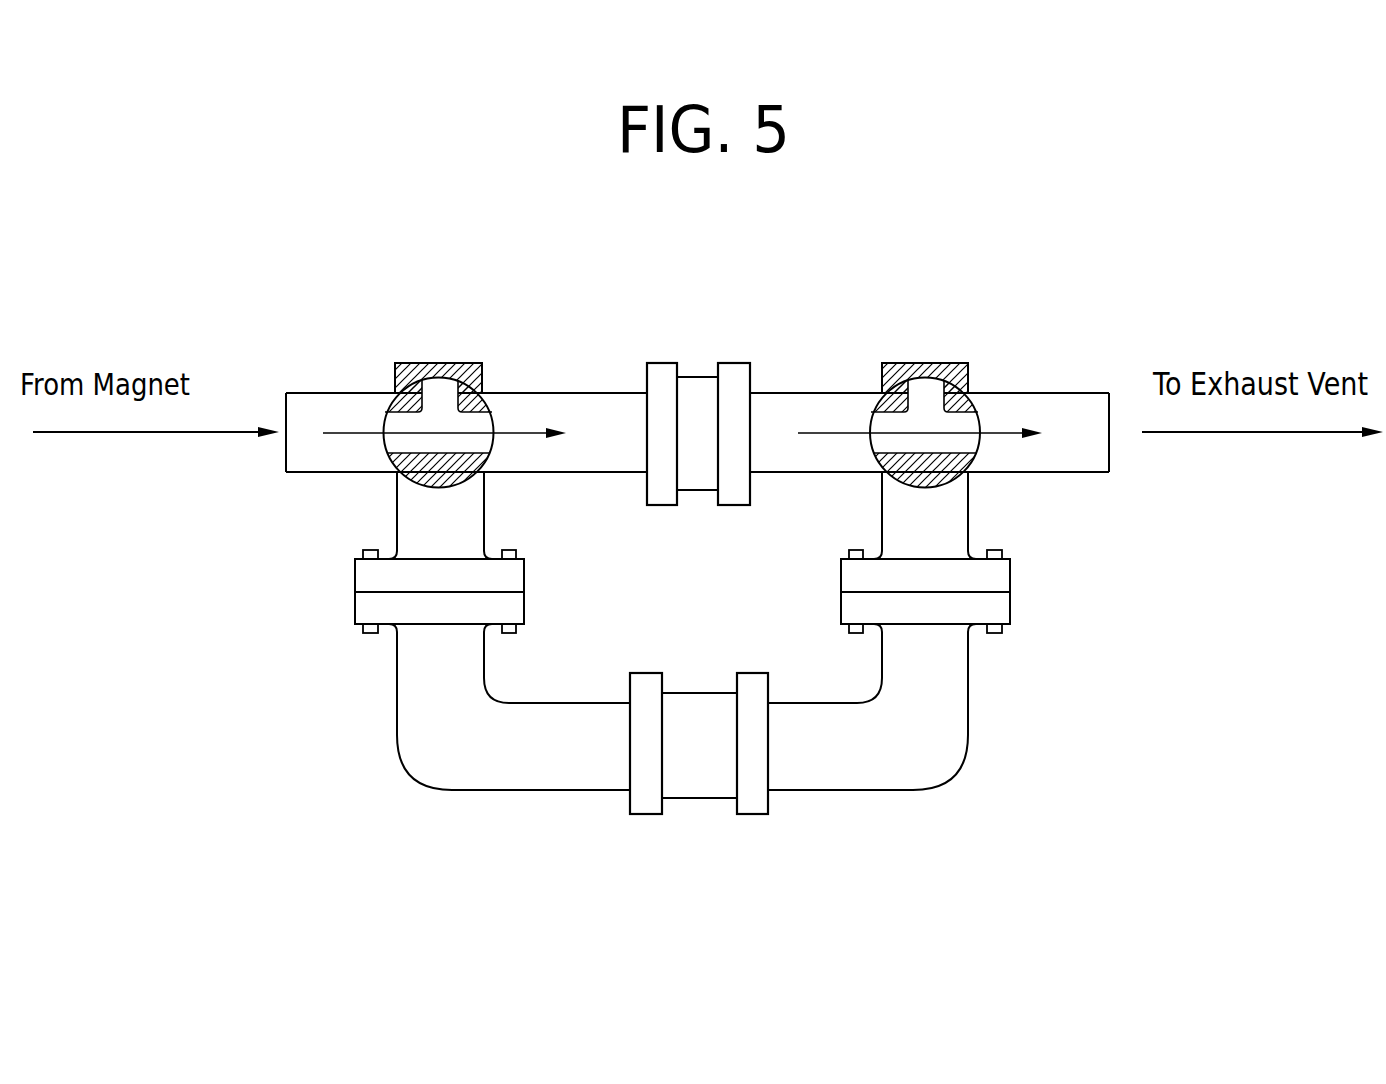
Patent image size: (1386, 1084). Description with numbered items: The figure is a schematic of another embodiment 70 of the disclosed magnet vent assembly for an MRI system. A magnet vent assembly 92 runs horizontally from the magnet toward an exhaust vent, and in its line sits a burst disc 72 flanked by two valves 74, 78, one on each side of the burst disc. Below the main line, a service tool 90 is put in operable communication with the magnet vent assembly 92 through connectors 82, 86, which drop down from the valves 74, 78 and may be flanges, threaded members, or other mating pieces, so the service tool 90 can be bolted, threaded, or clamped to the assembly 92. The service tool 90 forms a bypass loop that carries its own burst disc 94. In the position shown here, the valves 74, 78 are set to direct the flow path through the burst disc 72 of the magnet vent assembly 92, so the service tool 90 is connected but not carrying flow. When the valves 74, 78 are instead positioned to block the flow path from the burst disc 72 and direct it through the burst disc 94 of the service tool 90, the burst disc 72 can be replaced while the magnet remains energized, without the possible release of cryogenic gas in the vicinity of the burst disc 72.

The embodiment of the magnet vent assembly 70 is at (158, 205).
The magnet vent assembly 92 is at (310, 405).
The valve 74 is at (473, 363).
The burst disc 72 is at (698, 377).
The valve 78 is at (925, 362).
The connector 82 is at (418, 510).
The connector 86 is at (950, 515).
The service tool 90 is at (440, 763).
The burst disc 94 is at (695, 800).